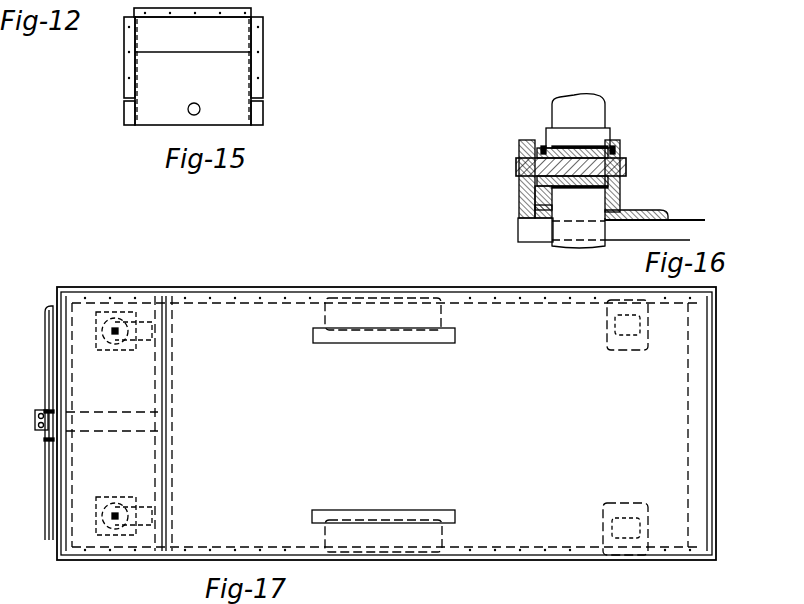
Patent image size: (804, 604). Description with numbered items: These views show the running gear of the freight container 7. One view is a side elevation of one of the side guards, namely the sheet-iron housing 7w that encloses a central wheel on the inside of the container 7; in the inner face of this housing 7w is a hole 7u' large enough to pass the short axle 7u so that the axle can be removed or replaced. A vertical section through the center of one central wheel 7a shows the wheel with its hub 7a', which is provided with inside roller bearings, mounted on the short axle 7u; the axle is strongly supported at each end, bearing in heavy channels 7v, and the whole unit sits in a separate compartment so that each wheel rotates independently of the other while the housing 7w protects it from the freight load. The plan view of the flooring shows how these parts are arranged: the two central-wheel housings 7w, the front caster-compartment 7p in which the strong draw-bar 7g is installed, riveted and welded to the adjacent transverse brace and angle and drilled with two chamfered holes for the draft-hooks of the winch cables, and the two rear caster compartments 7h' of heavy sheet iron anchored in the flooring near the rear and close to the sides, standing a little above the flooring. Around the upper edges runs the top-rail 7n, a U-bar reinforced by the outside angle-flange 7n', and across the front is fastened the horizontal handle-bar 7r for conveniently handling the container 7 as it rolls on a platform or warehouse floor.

In FIG. 17, the container 7 is at (248, 316).
In FIG. 16, the central wheel 7a is at (612, 107).
In FIG. 16, the hub 7a' is at (613, 135).
In FIG. 17, the draw-bar 7g is at (36, 428).
In FIG. 17, the caster compartment 7h' is at (633, 512).
In FIG. 17, the top-rail 7n is at (192, 404).
In FIG. 17, the outside angle-flange 7n' is at (384, 300).
In FIG. 17, the caster-compartment 7p is at (130, 402).
In FIG. 17, the handle-bar 7r is at (49, 342).
In FIG. 16, the short axle 7u is at (570, 197).
In FIG. 15, the hole 7u' is at (215, 98).
In FIG. 16, the channel 7v is at (622, 182).
In FIG. 15, the housing 7w is at (242, 26).
In FIG. 17, the housing 7w is at (443, 532).